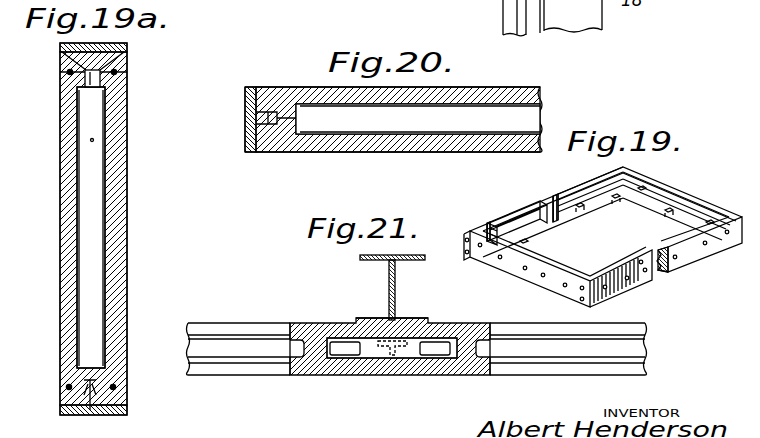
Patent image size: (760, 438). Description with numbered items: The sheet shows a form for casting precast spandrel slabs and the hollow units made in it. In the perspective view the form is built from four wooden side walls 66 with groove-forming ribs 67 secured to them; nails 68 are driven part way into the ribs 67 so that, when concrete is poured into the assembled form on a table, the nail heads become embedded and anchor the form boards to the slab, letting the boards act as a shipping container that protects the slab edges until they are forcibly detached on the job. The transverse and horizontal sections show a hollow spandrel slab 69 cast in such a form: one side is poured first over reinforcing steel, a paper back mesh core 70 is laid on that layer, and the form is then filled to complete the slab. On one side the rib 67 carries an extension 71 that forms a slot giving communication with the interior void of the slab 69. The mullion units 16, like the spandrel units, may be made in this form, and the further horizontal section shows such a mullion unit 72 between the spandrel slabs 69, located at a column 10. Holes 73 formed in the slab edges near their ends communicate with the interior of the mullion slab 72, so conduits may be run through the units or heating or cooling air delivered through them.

In FIG. 21, the columns 10 is at (395, 291).
In FIG. 20, the mullion units 16 is at (503, 14).
In FIG. 19A, the side walls 66 is at (60, 50).
In FIG. 20, the side walls 66 is at (246, 146).
In FIG. 19, the side walls 66 is at (522, 210).
In FIG. 19A, the groove-forming ribs 67 is at (82, 60).
In FIG. 19, the groove-forming ribs 67 is at (580, 200).
In FIG. 20, the nails 68 is at (275, 125).
In FIG. 19, the nails 68 is at (666, 212).
In FIG. 19A, the hollow spandrel slabs 69 is at (66, 192).
In FIG. 20, the hollow spandrel slabs 69 is at (378, 152).
In FIG. 21, the hollow spandrel slabs 69 is at (245, 371).
In FIG. 19A, the paper back mesh core 70 is at (105, 123).
In FIG. 20, the paper back mesh core 70 is at (455, 104).
In FIG. 19A, the extension 71 is at (95, 78).
In FIG. 21, the mullion unit 72 is at (466, 370).
In FIG. 21, the holes 73 is at (348, 356).